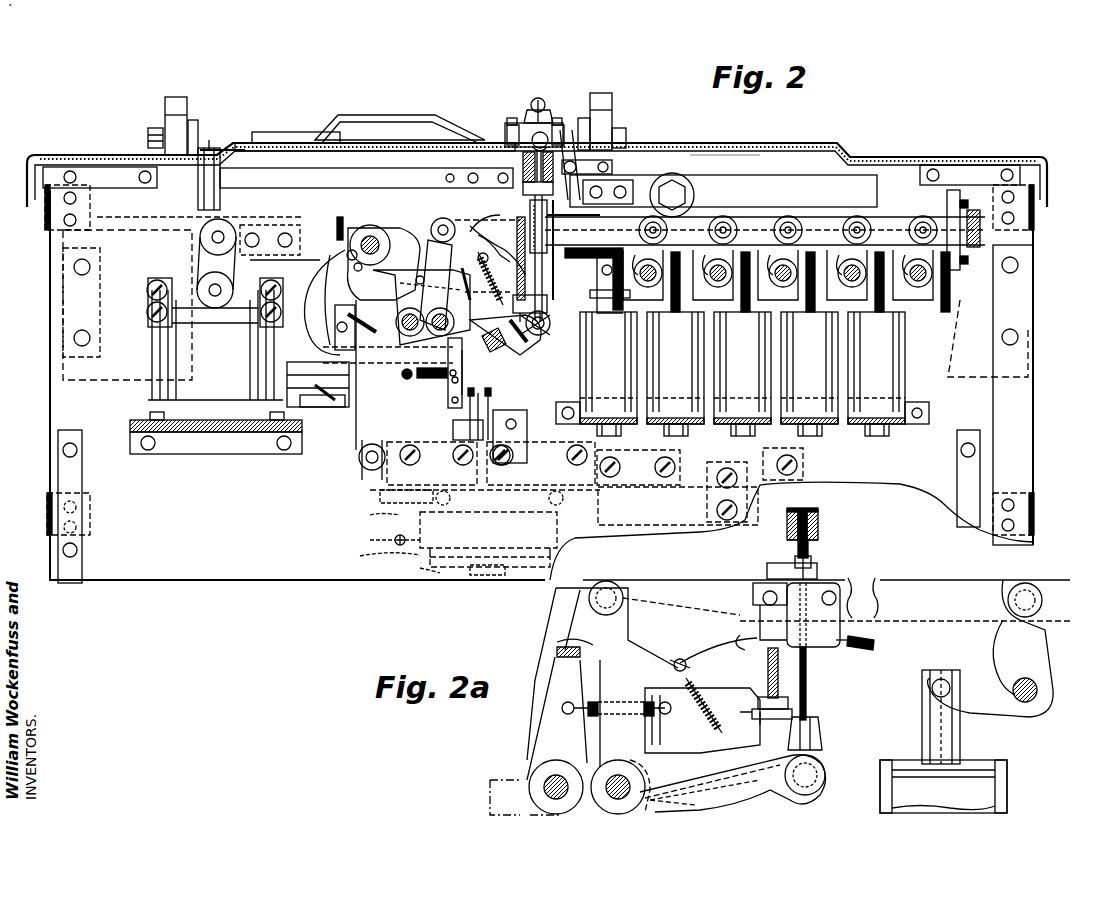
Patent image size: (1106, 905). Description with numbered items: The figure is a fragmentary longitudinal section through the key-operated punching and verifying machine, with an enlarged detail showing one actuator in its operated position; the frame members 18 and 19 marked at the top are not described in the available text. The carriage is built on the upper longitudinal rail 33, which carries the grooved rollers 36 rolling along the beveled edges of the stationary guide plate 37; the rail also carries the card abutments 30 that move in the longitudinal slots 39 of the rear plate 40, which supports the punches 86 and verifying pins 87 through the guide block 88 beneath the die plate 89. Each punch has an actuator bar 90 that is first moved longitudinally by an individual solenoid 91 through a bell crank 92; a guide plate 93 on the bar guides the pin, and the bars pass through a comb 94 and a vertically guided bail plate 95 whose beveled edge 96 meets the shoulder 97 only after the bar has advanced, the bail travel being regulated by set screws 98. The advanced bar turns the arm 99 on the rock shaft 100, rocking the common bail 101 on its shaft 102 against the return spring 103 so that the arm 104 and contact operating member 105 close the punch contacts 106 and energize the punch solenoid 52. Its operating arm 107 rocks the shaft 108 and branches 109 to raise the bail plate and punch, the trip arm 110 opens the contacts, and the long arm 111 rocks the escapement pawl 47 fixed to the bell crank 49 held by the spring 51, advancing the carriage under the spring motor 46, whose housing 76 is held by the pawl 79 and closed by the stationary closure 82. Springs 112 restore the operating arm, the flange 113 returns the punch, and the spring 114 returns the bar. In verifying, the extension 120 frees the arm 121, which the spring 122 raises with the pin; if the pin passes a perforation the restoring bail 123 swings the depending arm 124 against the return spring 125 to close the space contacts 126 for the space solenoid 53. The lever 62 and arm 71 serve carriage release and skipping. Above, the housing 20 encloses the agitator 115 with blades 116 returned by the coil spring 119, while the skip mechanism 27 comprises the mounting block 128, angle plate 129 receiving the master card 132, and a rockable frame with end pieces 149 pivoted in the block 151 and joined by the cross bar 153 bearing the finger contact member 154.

In FIG. 2, the top rail 18 is at (766, 157).
In FIG. 2, the frame rail 19 is at (698, 155).
In FIG. 2, the housing 20 is at (530, 110).
In FIG. 2, the automatic skip mechanism 27 is at (376, 104).
In FIG. 2, the card abutments 30 is at (210, 140).
In FIG. 2, the upper longitudinal rail 33 is at (638, 192).
In FIG. 2, the grooved rollers 36 is at (694, 195).
In FIG. 2, the stationary guide plate 37 is at (112, 380).
In FIG. 2, the longitudinal slots 39 is at (258, 197).
In FIG. 2, the rear plate 40 is at (243, 580).
In FIG. 2, the spring motor 46 is at (420, 522).
In FIG. 2, the pawl 47 is at (360, 460).
In FIG. 2, the bell crank 49 is at (462, 512).
In FIG. 2, the spring 51 is at (380, 507).
In FIG. 2, the punch solenoid 52 is at (200, 352).
In FIG. 2, the space solenoid 53 is at (598, 521).
In FIG. 2, the lever 62 is at (697, 445).
In FIG. 2, the arm 71 is at (647, 452).
In FIG. 2, the stationary housing 76 is at (378, 556).
In FIG. 2, the pawl 79 is at (395, 537).
In FIG. 2, the stationary closure 82 is at (420, 567).
In FIG. 2, the punch 86 is at (522, 166).
In FIG. 2A, the punch 86 is at (812, 556).
In FIG. 2, the verifying pin 87 is at (556, 258).
In FIG. 2A, the verifying pin 87 is at (808, 686).
In FIG. 2, the guide block 88 is at (576, 166).
In FIG. 2A, the guide block 88 is at (820, 535).
In FIG. 2, the die plate 89 is at (532, 140).
In FIG. 2A, the die plate 89 is at (808, 512).
In FIG. 2, the actuator bar 90 is at (742, 228).
In FIG. 2A, the actuator bar 90 is at (850, 582).
In FIG. 2, the solenoid 91 is at (595, 377).
In FIG. 2A, the solenoid 91 is at (960, 775).
In FIG. 2, the bell crank 92 is at (915, 260).
In FIG. 2A, the bell crank 92 is at (1025, 653).
In FIG. 2, the guide plate 93 is at (546, 225).
In FIG. 2A, the guide plate 93 is at (830, 648).
In FIG. 2, the comb 94 is at (565, 216).
In FIG. 2, the bail plate 95 is at (528, 270).
In FIG. 2A, the bail plate 95 is at (766, 680).
In FIG. 2, the beveled edge 96 is at (498, 248).
In FIG. 2A, the beveled edge 96 is at (757, 648).
In FIG. 2, the shoulder 97 is at (500, 218).
In FIG. 2A, the shoulder 97 is at (752, 645).
In FIG. 2, the set screws 98 is at (548, 298).
In FIG. 2A, the set screws 98 is at (812, 704).
In FIG. 2, the arm 99 is at (440, 218).
In FIG. 2A, the arm 99 is at (557, 640).
In FIG. 2, the rock shaft 100 is at (438, 336).
In FIG. 2A, the rock shaft 100 is at (610, 797).
In FIG. 2, the common bail 101 is at (420, 275).
In FIG. 2A, the common bail 101 is at (555, 688).
In FIG. 2, the shaft 102 is at (408, 336).
In FIG. 2A, the shaft 102 is at (545, 792).
In FIG. 2, the return spring 103 is at (420, 290).
In FIG. 2A, the return spring 103 is at (575, 722).
In FIG. 2, the arm 104 is at (425, 350).
In FIG. 2A, the arm 104 is at (515, 782).
In FIG. 2, the contact operating member 105 is at (345, 345).
In FIG. 2, the punch contacts 106 is at (330, 392).
In FIG. 2, the operating arm 107 is at (280, 225).
In FIG. 2, the rock shaft 108 is at (370, 236).
In FIG. 2, the branches 109 is at (385, 238).
In FIG. 2A, the branches 109 is at (548, 600).
In FIG. 2, the trip arm 110 is at (335, 268).
In FIG. 2, the long arm 111 is at (356, 432).
In FIG. 2, the springs 112 is at (462, 376).
In FIG. 2, the flange 113 is at (527, 212).
In FIG. 2A, the flange 113 is at (767, 568).
In FIG. 2, the spring 114 is at (600, 290).
In FIG. 2A, the spring 114 is at (876, 643).
In FIG. 2, the agitator 115 is at (512, 123).
In FIG. 2, the blades 116 is at (560, 123).
In FIG. 2, the coil spring 119 is at (540, 100).
In FIG. 2, the extension 120 is at (466, 292).
In FIG. 2A, the extension 120 is at (700, 745).
In FIG. 2, the arm 121 is at (520, 352).
In FIG. 2A, the arm 121 is at (745, 790).
In FIG. 2, the spring 122 is at (485, 280).
In FIG. 2A, the spring 122 is at (700, 686).
In FIG. 2, the restoring bail 123 is at (551, 322).
In FIG. 2A, the restoring bail 123 is at (752, 714).
In FIG. 2, the depending arm 124 is at (448, 390).
In FIG. 2A, the depending arm 124 is at (655, 815).
In FIG. 2, the return spring 125 is at (420, 378).
In FIG. 2, the space contacts 126 is at (480, 392).
In FIG. 2, the mounting block 128 is at (400, 118).
In FIG. 2, the angle plate 129 is at (320, 138).
In FIG. 2A, the master card 132 is at (820, 520).
In FIG. 2, the end pieces 149 is at (193, 120).
In FIG. 2, the block 151 is at (178, 97).
In FIG. 2, the cross bar 153 is at (233, 148).
In FIG. 2, the finger contact member 154 is at (270, 132).